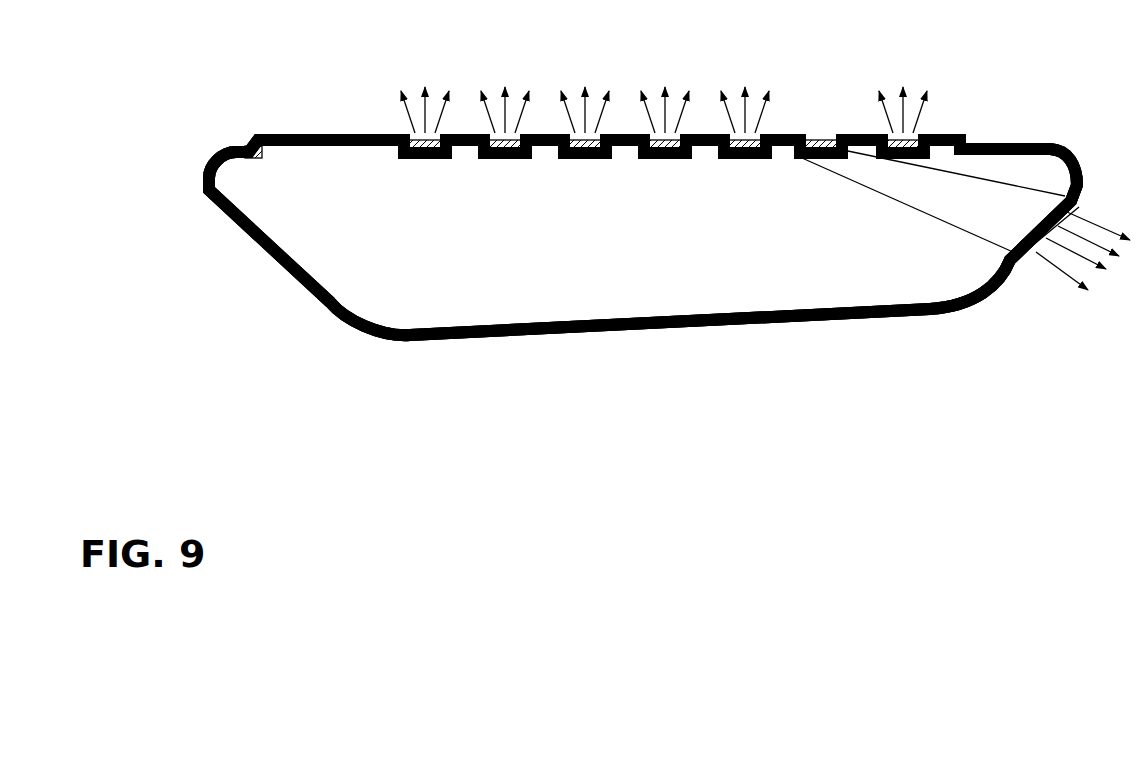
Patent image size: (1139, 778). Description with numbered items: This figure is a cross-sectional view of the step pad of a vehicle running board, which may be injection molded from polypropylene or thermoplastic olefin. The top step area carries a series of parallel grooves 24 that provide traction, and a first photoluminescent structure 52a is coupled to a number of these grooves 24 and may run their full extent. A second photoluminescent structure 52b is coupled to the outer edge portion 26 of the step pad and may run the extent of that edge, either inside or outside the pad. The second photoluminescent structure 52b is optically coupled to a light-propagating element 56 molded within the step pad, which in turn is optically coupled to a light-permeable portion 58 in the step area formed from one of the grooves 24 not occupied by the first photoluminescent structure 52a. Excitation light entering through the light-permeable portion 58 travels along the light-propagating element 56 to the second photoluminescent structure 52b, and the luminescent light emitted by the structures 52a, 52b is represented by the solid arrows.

The grooves 24 is at (432, 153).
The outer edge portion 26 is at (1069, 213).
The first photoluminescent structure 52a is at (415, 134).
The second photoluminescent structure 52b is at (1044, 250).
The light-propagating element 56 is at (943, 198).
The light-permeable portion 58 is at (816, 140).